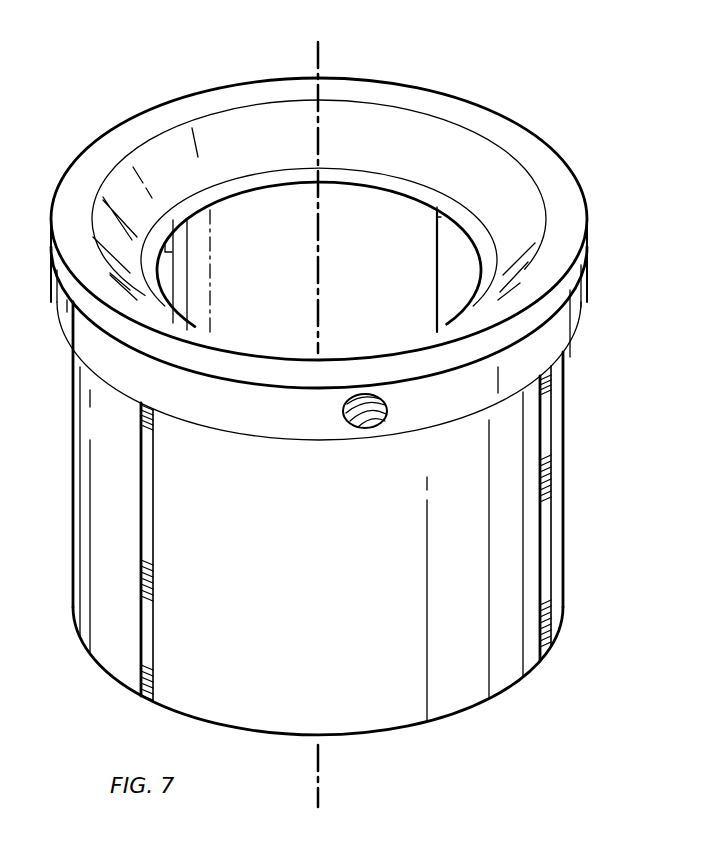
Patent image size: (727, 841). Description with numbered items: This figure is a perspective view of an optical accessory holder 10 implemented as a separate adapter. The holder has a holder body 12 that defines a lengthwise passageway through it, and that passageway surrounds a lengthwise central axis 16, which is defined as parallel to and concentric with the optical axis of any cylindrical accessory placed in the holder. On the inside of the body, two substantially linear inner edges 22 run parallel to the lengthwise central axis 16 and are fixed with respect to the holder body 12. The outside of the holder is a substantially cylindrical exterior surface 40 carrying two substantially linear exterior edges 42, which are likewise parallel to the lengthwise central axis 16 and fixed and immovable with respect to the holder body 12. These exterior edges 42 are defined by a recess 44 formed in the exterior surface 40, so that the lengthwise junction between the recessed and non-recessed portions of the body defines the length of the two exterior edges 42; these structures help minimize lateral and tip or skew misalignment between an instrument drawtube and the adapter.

The optical accessory holder 10 is at (636, 203).
The holder body 12 is at (67, 213).
The lengthwise central axis 16 is at (318, 221).
The inner edges 22 is at (168, 266).
The exterior surface 40 is at (107, 650).
The exterior edges 42 is at (140, 457).
The recess 44 is at (363, 708).